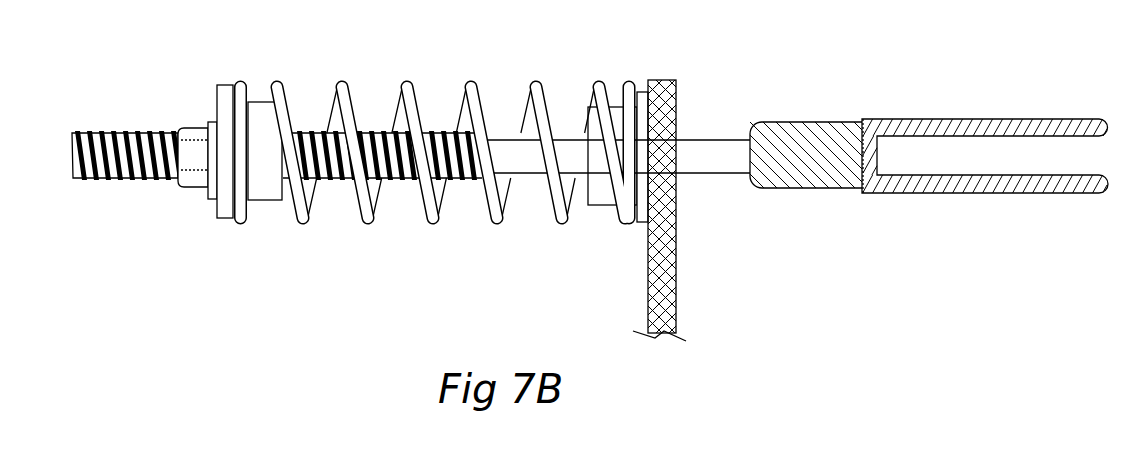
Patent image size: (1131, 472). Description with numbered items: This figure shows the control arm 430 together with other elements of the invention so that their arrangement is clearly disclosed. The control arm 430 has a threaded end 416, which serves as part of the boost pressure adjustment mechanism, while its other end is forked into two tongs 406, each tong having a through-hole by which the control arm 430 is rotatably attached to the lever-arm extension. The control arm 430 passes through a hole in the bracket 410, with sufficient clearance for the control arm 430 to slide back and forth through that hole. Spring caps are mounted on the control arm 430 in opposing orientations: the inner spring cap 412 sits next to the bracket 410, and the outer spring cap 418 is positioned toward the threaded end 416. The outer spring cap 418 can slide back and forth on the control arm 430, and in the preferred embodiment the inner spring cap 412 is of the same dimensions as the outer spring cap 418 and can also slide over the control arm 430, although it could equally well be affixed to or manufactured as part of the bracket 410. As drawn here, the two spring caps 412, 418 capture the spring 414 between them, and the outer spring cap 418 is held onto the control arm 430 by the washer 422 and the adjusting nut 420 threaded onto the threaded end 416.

The tong 406 is at (1014, 118).
The bracket 410 is at (662, 78).
The inner spring cap 412 is at (603, 206).
The spring 414 is at (402, 80).
The threaded end 416 is at (126, 132).
The outer spring cap 418 is at (224, 222).
The adjusting nut 420 is at (198, 126).
The washer 422 is at (212, 206).
The control arm 430 is at (562, 137).